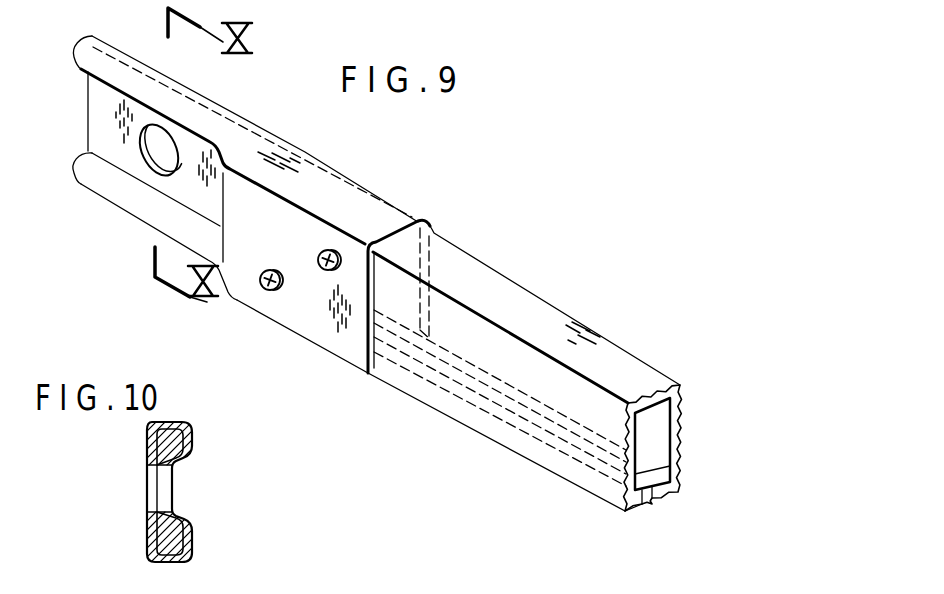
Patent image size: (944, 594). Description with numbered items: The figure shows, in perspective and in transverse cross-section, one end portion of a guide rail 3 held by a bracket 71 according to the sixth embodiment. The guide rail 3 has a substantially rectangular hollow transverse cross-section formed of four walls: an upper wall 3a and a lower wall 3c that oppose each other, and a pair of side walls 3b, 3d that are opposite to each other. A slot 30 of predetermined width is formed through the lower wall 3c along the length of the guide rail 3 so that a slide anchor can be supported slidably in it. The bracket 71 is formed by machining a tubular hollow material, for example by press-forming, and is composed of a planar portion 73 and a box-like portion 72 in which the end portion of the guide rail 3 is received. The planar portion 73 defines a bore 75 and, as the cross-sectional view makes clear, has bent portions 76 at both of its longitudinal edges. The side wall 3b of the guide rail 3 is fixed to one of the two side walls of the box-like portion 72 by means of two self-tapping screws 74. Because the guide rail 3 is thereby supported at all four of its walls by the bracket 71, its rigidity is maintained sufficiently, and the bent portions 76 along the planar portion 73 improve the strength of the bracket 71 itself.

In FIG. 9, the guide rail 3 is at (544, 398).
In FIG. 9, the upper wall 3a is at (529, 321).
In FIG. 9, the side wall 3b is at (515, 370).
In FIG. 9, the lower wall 3c is at (630, 515).
In FIG. 9, the side wall 3d is at (682, 418).
In FIG. 9, the slot 30 is at (646, 502).
In FIG. 9, the bracket 71 is at (226, 210).
In FIG. 9, the box-like portion 72 is at (287, 328).
In FIG. 9, the planar portion 73 is at (103, 132).
In FIG. 10, the planar portion 73 is at (176, 527).
In FIG. 9, the self-tapping screws 74 is at (325, 250).
In FIG. 9, the bore 75 is at (165, 138).
In FIG. 9, the bent portions 76 is at (138, 88).
In FIG. 10, the bent portions 76 is at (188, 432).